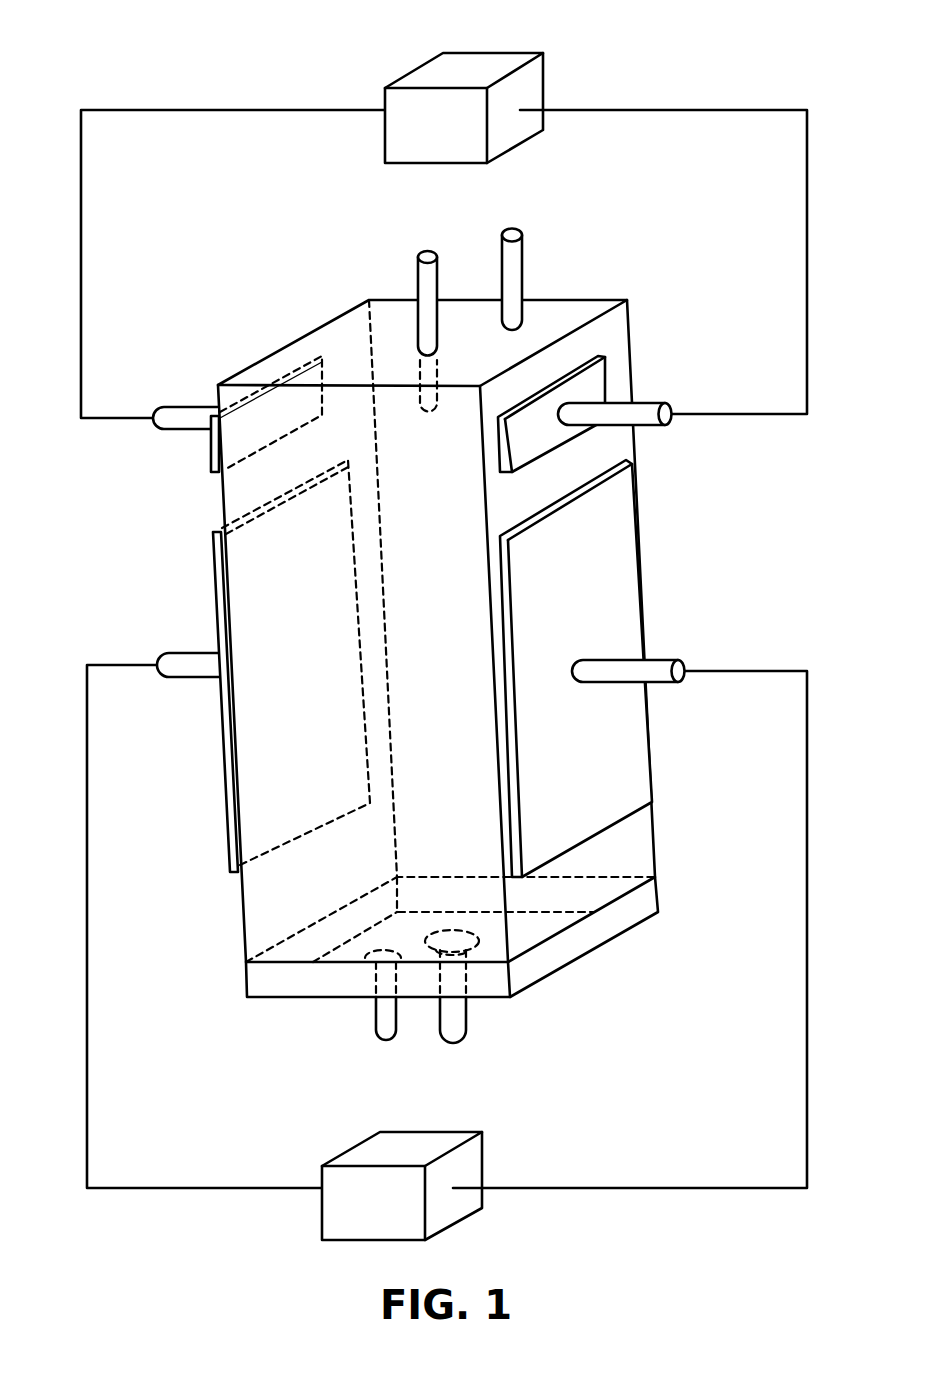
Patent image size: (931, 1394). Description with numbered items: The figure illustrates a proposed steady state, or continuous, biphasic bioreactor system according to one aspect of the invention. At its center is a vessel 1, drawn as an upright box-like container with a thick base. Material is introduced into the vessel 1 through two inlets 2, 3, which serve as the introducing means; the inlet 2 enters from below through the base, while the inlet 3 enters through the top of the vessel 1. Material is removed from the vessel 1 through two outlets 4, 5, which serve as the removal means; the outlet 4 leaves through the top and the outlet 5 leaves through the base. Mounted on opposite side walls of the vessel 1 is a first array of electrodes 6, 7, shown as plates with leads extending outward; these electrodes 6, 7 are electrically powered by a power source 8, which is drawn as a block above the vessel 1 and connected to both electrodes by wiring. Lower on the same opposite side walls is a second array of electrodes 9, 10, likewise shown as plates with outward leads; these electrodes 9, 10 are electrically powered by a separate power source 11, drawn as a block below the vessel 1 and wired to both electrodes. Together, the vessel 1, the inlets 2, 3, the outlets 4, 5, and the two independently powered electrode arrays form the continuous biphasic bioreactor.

The vessel 1 is at (258, 919).
The inlet 2 is at (456, 1058).
The inlet 3 is at (425, 239).
The outlet 4 is at (507, 223).
The outlet 5 is at (387, 1040).
The electrode 6 is at (195, 385).
The electrode 7 is at (660, 379).
The power source 8 is at (403, 75).
The electrode 9 is at (198, 636).
The electrode 10 is at (670, 639).
The power source 11 is at (330, 1147).